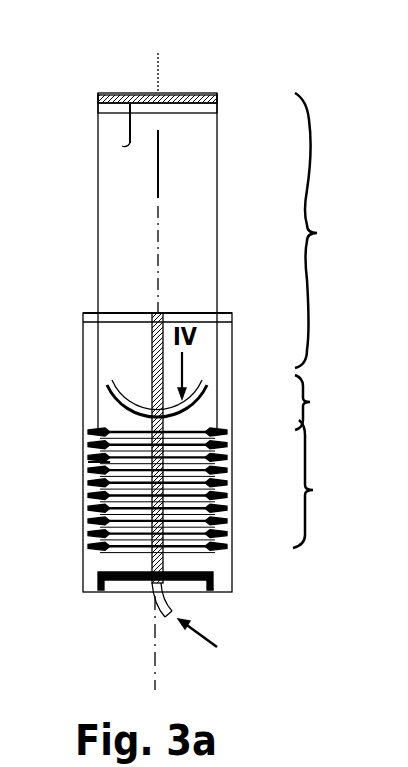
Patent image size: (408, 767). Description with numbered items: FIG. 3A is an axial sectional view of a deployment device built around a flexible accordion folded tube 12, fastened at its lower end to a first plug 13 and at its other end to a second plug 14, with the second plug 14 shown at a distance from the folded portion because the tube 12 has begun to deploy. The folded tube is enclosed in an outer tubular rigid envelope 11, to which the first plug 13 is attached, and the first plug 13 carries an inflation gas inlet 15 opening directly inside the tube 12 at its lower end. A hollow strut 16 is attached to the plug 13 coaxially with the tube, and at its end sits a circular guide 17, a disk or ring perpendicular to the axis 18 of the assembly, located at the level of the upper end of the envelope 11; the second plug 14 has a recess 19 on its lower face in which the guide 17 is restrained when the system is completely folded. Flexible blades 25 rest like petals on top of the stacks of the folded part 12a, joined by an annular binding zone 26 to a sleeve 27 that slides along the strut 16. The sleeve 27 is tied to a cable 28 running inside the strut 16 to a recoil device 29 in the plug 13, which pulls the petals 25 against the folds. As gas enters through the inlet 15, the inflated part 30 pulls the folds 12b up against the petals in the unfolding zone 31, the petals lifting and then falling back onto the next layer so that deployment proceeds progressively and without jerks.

The outer tubular rigid envelope 11 is at (228, 314).
The flexible accordion folded tube 12 is at (221, 163).
The folded part of the tube 12a is at (324, 484).
The folds 12b is at (228, 393).
The first plug 13 is at (110, 600).
The second plug 14 is at (191, 92).
The inflation gas inlet 15 is at (157, 618).
The hollow strut 16 is at (92, 507).
The circular guide 17 is at (181, 308).
The axis 18 is at (156, 190).
The recess 19 is at (122, 145).
The flexible blade 25 is at (209, 372).
The annular binding zone 26 is at (150, 375).
The sleeve 27 is at (98, 462).
The cable 28 is at (152, 349).
The recoil device 29 is at (199, 600).
The inflated part of the tube 30 is at (322, 230).
The unfolding zone 31 is at (316, 402).